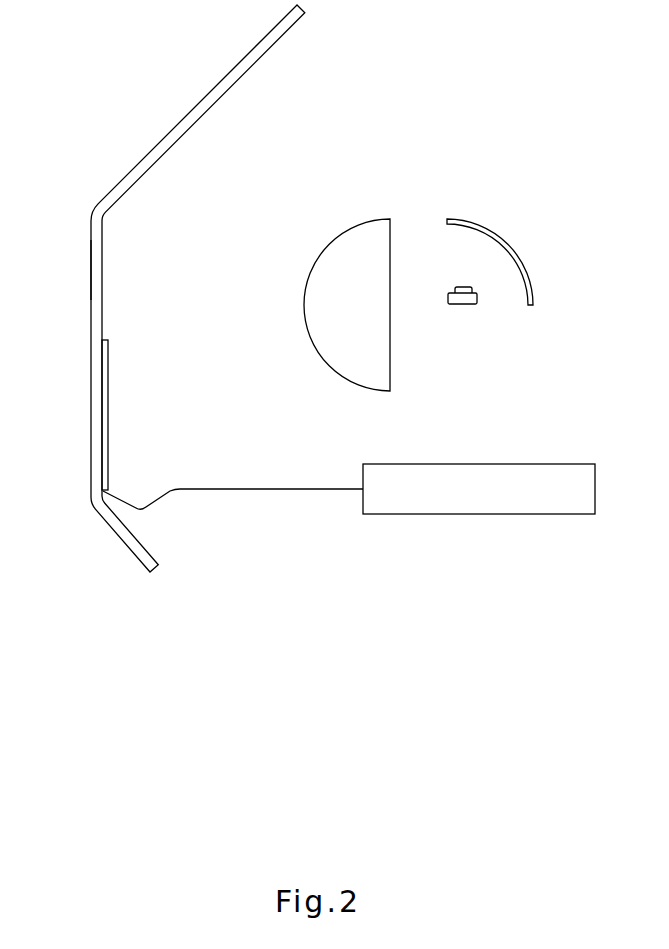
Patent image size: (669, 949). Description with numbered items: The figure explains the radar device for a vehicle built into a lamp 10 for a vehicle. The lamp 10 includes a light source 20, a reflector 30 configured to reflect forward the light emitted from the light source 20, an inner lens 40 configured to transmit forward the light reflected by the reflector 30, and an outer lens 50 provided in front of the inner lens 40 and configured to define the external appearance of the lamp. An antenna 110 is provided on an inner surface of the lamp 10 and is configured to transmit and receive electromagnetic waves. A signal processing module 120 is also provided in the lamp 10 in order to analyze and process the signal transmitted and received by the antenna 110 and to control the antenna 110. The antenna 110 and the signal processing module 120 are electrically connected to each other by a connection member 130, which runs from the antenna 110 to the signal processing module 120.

The lamp for a vehicle 10 is at (173, 106).
The light source 20 is at (461, 287).
The reflector 30 is at (458, 219).
The inner lens 40 is at (352, 247).
The outer lens 50 is at (91, 269).
The antenna 110 is at (93, 406).
The signal processing module 120 is at (471, 526).
The connection member 130 is at (272, 492).